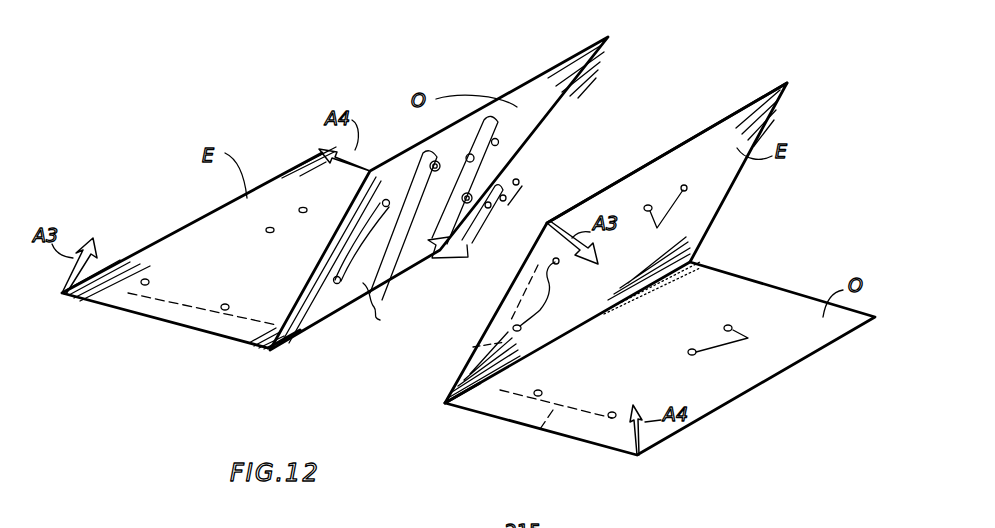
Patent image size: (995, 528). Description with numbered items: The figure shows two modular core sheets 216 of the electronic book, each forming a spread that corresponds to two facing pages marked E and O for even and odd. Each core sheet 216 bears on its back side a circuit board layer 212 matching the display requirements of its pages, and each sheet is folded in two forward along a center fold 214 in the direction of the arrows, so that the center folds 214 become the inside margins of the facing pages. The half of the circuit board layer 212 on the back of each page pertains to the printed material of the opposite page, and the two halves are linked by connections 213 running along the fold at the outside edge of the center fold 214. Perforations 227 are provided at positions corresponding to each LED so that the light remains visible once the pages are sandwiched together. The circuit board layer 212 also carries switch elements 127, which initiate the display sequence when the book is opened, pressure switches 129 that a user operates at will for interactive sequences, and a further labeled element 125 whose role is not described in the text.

The circuit board layer 212 is at (162, 318).
The connections 213 is at (370, 300).
The center fold 214 is at (268, 350).
The core sheet 216 is at (686, 126).
The perforations 227 is at (225, 305).
The strip 125 is at (317, 328).
The switch elements 127 is at (513, 191).
The pressure switches 129 is at (433, 162).